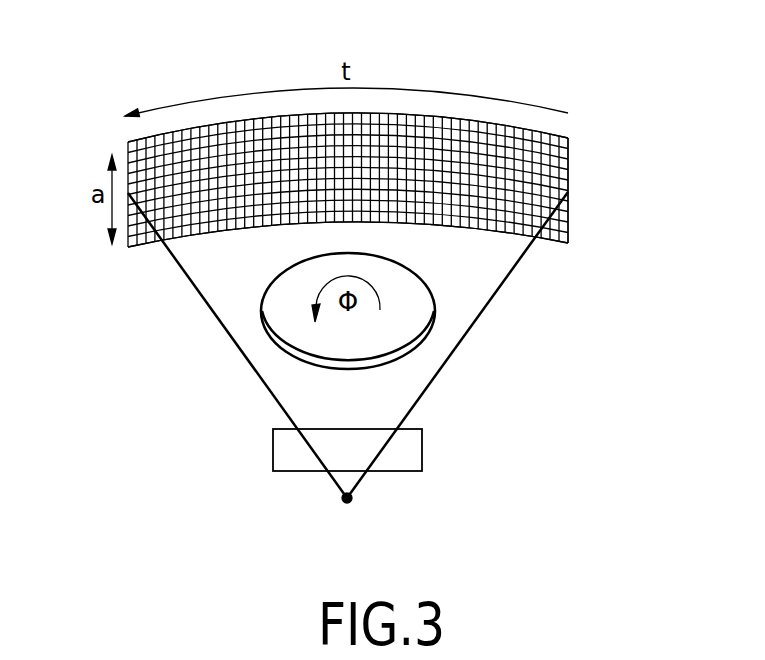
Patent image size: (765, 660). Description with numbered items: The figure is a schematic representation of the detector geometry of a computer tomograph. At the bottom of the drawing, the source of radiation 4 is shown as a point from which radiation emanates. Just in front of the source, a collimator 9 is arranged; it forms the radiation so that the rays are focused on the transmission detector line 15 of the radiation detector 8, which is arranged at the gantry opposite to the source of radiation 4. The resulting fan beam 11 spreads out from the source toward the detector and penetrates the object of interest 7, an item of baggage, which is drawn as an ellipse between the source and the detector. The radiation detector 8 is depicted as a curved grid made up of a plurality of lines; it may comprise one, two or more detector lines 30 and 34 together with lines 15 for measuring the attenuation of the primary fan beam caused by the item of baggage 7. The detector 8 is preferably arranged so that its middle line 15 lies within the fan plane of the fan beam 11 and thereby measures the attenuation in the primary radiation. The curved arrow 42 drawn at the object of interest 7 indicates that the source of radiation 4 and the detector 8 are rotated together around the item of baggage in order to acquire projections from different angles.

The radiation detector 8 is at (128, 142).
The detector line 30 is at (568, 138).
The transmission detector line 15 is at (568, 192).
The detector line 34 is at (568, 243).
The object of interest 7 is at (428, 280).
The arrow 42 is at (342, 356).
The fan beam 11 is at (467, 337).
The collimator 9 is at (422, 448).
The source of radiation 4 is at (352, 498).